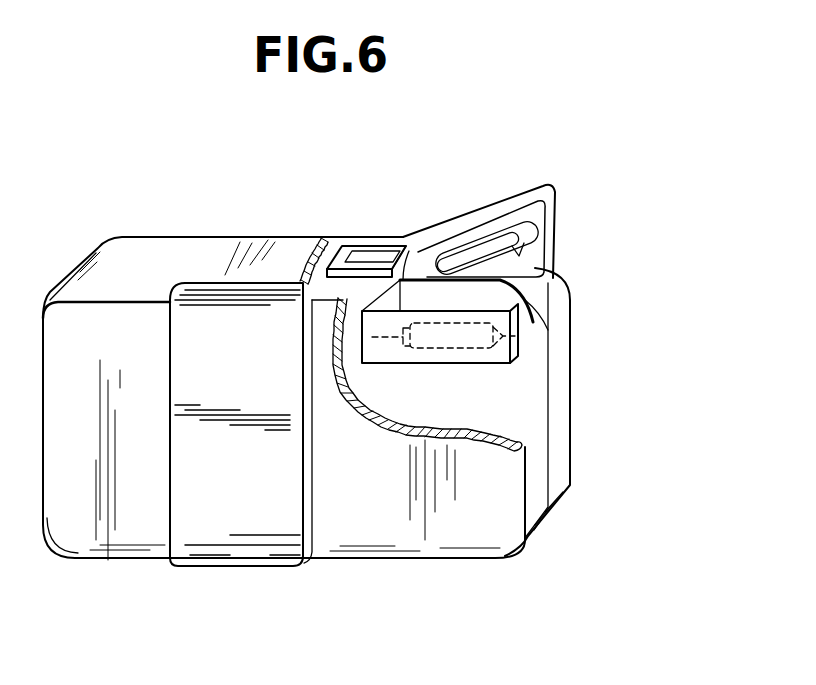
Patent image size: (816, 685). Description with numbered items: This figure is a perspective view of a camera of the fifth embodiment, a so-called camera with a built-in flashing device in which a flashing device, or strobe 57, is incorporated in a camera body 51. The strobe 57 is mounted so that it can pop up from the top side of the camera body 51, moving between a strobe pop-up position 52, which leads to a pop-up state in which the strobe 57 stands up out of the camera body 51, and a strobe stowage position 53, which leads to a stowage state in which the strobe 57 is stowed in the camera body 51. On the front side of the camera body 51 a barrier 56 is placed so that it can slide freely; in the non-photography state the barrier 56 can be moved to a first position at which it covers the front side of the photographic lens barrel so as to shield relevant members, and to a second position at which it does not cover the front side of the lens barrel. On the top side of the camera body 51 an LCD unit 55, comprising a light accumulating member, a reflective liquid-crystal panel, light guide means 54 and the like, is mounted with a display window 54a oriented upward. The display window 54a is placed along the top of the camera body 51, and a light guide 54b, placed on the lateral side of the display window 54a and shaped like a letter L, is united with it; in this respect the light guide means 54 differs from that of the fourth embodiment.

The camera body 51 is at (410, 553).
The strobe pop-up position 52 is at (568, 182).
The strobe stowage position 53 is at (540, 344).
The light guide means 54 is at (391, 236).
The display window 54a is at (412, 245).
The light guide 54b is at (498, 358).
The LCD unit 55 is at (362, 256).
The barrier 56 is at (243, 555).
The flashing device (strobe) 57 is at (528, 230).